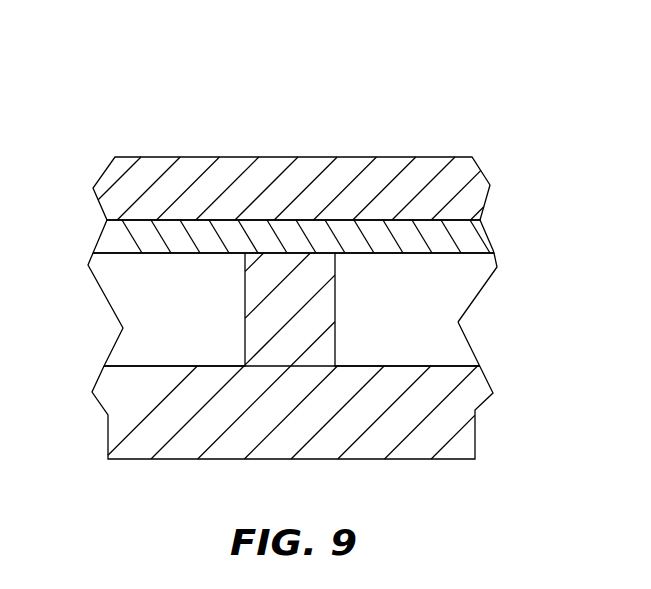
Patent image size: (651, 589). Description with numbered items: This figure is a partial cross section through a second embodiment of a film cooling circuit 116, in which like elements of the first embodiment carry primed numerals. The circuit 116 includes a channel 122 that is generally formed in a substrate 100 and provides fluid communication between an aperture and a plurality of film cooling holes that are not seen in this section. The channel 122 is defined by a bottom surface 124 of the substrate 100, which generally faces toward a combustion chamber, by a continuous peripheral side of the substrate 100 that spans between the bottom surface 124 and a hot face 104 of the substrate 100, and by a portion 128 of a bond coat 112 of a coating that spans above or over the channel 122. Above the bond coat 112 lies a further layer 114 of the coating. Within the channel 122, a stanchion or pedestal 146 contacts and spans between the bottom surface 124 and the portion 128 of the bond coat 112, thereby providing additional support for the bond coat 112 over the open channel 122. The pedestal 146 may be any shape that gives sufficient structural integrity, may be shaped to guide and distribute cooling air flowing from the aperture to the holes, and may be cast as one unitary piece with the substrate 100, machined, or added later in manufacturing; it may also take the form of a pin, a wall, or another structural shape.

The substrate 100 is at (460, 407).
The hot face 104 is at (160, 252).
The bond coat 112 is at (490, 238).
The top dielectric layer 114 is at (192, 177).
The film cooling circuit 116 is at (504, 103).
The channel 122 is at (423, 321).
The bottom surface 124 is at (447, 365).
The portion of bond coat 128 is at (437, 254).
The pedestal 146 is at (283, 305).